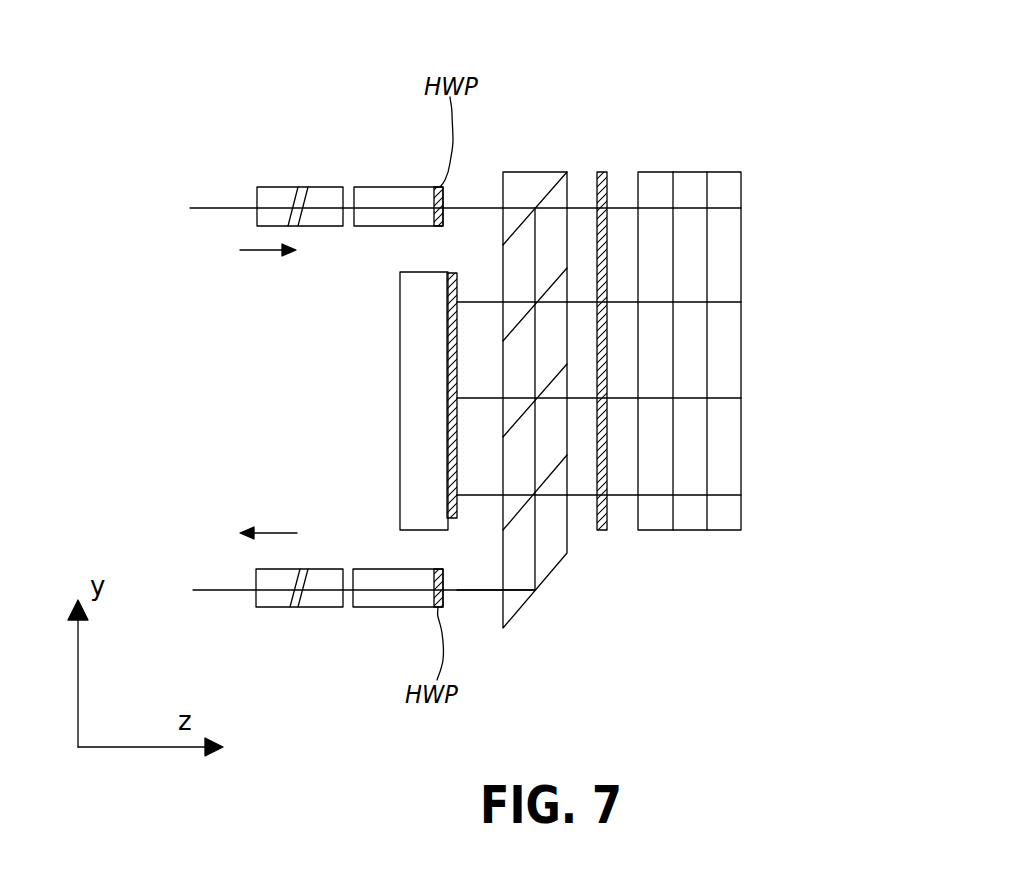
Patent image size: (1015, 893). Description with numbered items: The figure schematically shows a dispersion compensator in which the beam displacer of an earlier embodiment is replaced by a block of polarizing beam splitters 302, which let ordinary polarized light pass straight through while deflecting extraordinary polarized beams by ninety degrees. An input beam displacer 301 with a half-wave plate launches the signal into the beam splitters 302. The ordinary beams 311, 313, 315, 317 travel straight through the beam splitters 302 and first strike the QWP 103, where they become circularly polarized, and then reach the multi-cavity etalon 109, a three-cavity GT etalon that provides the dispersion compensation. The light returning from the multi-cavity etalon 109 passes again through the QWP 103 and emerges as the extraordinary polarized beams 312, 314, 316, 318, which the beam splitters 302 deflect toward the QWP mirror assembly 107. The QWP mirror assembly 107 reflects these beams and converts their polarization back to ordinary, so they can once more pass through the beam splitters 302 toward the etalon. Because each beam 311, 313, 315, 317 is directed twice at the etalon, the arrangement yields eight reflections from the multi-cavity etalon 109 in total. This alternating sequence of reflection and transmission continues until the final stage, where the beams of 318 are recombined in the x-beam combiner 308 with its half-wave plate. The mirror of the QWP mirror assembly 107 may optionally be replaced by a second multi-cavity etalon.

The beam displacer (xBD) with half-wave plate 301 is at (357, 185).
The x-beam combiner 308 is at (390, 607).
The QWP mirror assembly 107 is at (438, 270).
The polarizing beam splitters 302 is at (556, 170).
The QWP 103 is at (603, 172).
The multi-cavity etalon 109 is at (690, 172).
The ordinary beam 311 is at (579, 207).
The e polarized beam 312 is at (536, 236).
The ordinary beam 313 is at (581, 302).
The e polarized beam 314 is at (536, 326).
The ordinary beam 315 is at (581, 397).
The e polarized beam 316 is at (536, 426).
The ordinary beam 317 is at (581, 493).
The e polarized beam 318 is at (536, 521).